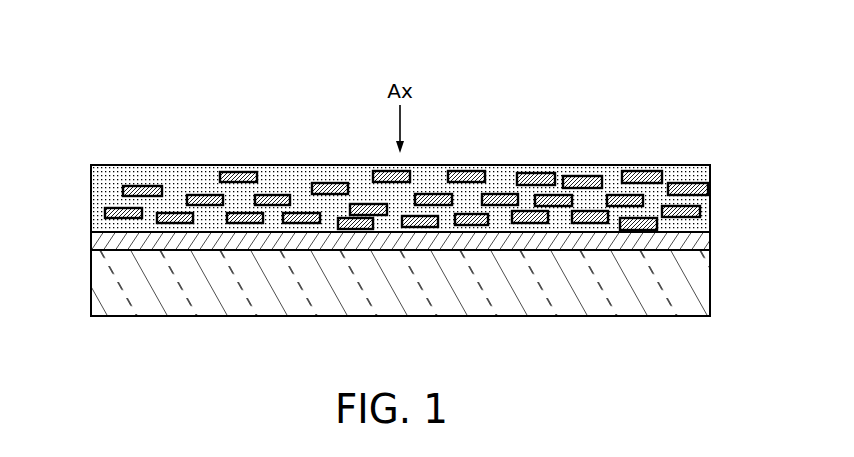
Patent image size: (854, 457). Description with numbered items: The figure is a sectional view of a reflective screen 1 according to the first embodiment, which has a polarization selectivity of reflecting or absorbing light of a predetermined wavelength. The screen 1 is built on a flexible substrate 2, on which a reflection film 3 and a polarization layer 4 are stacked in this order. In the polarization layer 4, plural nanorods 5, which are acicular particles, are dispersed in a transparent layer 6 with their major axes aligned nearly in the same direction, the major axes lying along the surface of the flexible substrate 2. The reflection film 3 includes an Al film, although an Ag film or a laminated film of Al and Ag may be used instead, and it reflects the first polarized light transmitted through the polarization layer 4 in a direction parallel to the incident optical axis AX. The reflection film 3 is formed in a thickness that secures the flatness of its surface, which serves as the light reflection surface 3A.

The reflective screen 1 is at (414, 168).
The flexible substrate 2 is at (701, 276).
The reflection film 3 is at (400, 238).
The light reflection surface 3A is at (97, 228).
The polarization layer 4 is at (449, 155).
The nanorods 5 is at (237, 173).
The transparent layer 6 is at (610, 174).